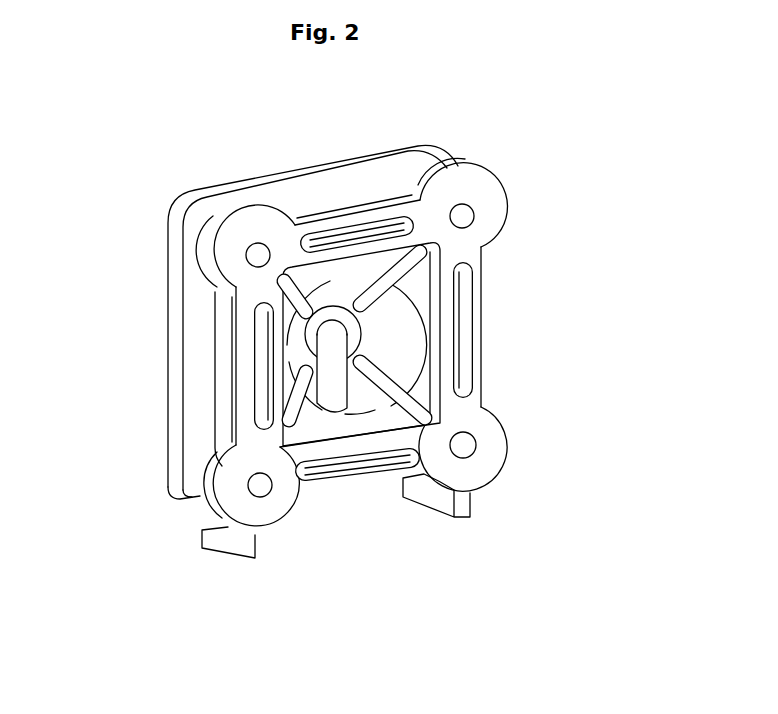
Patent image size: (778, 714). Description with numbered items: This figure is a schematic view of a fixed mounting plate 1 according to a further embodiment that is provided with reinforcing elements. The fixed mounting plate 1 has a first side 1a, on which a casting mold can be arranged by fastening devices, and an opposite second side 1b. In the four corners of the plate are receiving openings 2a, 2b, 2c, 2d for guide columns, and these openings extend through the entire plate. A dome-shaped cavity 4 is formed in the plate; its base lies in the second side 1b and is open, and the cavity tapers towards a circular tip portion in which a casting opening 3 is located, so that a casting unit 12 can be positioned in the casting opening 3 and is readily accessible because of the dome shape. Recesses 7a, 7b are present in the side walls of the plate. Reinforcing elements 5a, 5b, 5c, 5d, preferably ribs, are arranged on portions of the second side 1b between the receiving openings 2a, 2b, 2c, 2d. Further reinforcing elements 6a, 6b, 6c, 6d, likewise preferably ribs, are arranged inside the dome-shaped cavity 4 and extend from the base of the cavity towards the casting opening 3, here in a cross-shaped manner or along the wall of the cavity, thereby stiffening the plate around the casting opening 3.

The fixed mounting plate 1 is at (537, 297).
The first side 1a is at (176, 362).
The second side 1b is at (478, 406).
The receiving opening 2a is at (250, 253).
The receiving opening 2b is at (459, 220).
The receiving opening 2c is at (258, 488).
The receiving opening 2d is at (465, 445).
The casting opening 3 is at (338, 323).
The dome-shaped cavity 4 is at (290, 330).
The reinforcing element 5a is at (372, 238).
The reinforcing element 5b is at (468, 325).
The reinforcing element 5c is at (330, 472).
The reinforcing element 5d is at (268, 380).
The reinforcing element 6a is at (292, 292).
The reinforcing element 6b is at (405, 265).
The reinforcing element 6c is at (422, 417).
The reinforcing element 6d is at (288, 423).
The recess 7a is at (310, 207).
The recess 7b is at (220, 372).
The casting unit 12 is at (343, 417).